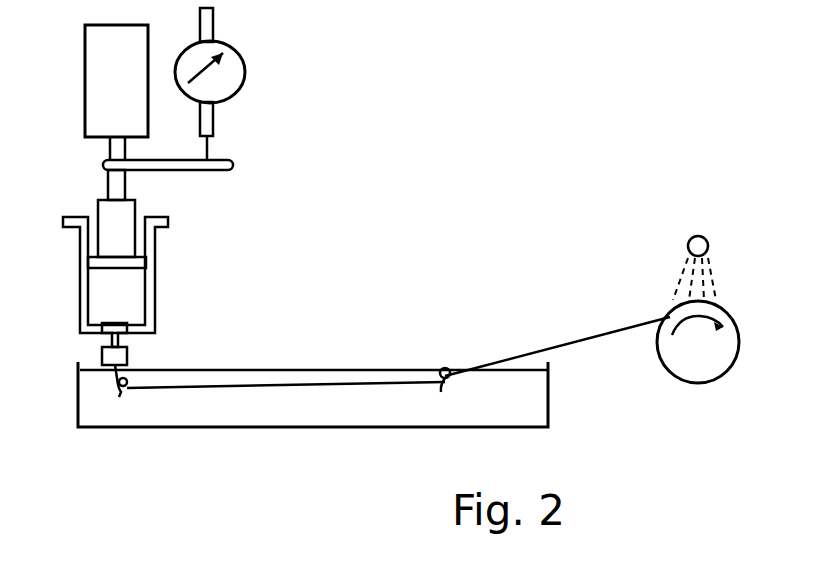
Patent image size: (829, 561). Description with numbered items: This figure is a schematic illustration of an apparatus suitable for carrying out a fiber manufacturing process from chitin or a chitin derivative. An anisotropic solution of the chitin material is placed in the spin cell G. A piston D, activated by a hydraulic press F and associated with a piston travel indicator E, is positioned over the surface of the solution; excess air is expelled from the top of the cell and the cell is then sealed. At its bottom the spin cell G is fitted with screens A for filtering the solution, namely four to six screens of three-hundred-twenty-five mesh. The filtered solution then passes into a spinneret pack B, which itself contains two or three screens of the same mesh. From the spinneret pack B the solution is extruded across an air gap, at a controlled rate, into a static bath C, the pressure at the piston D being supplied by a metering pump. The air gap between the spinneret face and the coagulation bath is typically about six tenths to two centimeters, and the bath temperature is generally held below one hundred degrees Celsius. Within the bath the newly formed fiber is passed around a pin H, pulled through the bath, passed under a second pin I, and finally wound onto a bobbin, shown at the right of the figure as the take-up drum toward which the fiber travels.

The screens A is at (119, 326).
The spinneret pack B is at (130, 355).
The static bath C is at (92, 400).
The piston D is at (140, 262).
The piston travel indicator E is at (230, 70).
The hydraulic press F is at (95, 88).
The spin cell G is at (82, 290).
The pin H is at (120, 393).
The second pin I is at (441, 391).